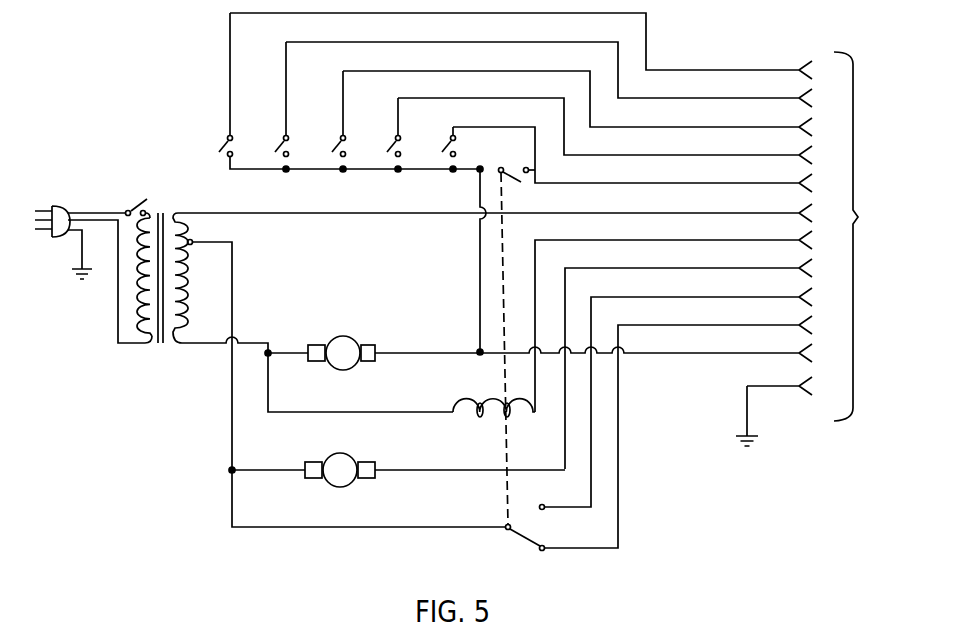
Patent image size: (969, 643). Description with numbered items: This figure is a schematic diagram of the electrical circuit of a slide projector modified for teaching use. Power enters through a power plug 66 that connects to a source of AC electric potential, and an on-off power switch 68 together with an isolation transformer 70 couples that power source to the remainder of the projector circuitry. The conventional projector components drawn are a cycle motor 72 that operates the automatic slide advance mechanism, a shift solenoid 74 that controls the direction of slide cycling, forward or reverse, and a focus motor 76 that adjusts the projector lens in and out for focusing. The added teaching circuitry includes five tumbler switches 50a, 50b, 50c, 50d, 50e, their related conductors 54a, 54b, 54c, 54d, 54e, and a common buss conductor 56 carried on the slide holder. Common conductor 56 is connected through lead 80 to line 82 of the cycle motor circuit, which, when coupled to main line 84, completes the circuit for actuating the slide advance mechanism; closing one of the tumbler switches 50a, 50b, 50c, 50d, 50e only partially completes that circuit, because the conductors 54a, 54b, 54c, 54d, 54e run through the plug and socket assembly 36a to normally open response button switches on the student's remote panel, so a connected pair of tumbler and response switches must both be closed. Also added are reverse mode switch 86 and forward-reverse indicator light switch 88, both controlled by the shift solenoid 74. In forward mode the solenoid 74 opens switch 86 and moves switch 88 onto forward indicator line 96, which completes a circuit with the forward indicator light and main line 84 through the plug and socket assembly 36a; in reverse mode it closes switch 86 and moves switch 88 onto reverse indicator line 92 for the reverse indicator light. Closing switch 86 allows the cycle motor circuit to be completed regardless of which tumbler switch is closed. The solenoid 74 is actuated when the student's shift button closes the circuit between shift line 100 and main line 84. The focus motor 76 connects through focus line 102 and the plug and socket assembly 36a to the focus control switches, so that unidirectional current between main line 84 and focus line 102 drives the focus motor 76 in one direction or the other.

The plug and socket assembly 36a is at (864, 236).
The tumbler switch 50a is at (230, 137).
The tumbler switch 50b is at (286, 137).
The tumbler switch 50c is at (343, 137).
The tumbler switch 50d is at (398, 137).
The tumbler switch 50e is at (453, 137).
The conductor 54a is at (538, 47).
The conductor 54b is at (566, 75).
The conductor 54c is at (594, 104).
The conductor 54d is at (622, 132).
The conductor 54e is at (650, 160).
The common buss conductor 56 is at (277, 170).
The power plug 66 is at (62, 209).
The on-off power switch 68 is at (142, 205).
The isolation transformer 70 is at (160, 347).
The cycle motor 72 is at (331, 337).
The shift solenoid 74 is at (490, 421).
The focus motor 76 is at (344, 453).
The lead 80 is at (478, 292).
The line 82 is at (460, 354).
The main line 84 is at (314, 213).
The reverse mode switch 86 is at (510, 167).
The forward-reverse indicator light switch 88 is at (527, 540).
The reverse indicator line 92 is at (688, 399).
The forward indicator line 96 is at (691, 432).
The shift line 100 is at (691, 321).
The focus line 102 is at (706, 364).